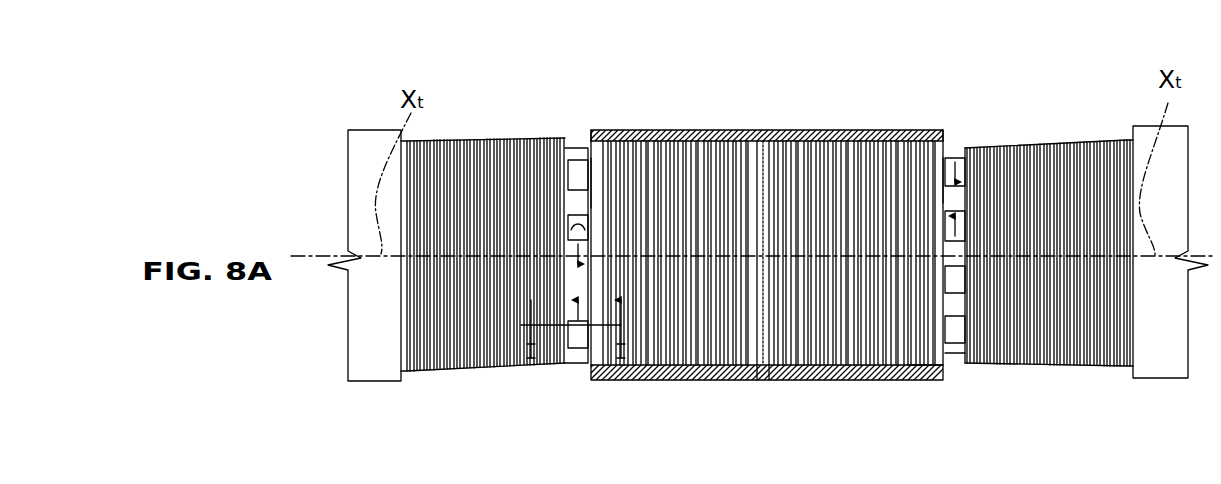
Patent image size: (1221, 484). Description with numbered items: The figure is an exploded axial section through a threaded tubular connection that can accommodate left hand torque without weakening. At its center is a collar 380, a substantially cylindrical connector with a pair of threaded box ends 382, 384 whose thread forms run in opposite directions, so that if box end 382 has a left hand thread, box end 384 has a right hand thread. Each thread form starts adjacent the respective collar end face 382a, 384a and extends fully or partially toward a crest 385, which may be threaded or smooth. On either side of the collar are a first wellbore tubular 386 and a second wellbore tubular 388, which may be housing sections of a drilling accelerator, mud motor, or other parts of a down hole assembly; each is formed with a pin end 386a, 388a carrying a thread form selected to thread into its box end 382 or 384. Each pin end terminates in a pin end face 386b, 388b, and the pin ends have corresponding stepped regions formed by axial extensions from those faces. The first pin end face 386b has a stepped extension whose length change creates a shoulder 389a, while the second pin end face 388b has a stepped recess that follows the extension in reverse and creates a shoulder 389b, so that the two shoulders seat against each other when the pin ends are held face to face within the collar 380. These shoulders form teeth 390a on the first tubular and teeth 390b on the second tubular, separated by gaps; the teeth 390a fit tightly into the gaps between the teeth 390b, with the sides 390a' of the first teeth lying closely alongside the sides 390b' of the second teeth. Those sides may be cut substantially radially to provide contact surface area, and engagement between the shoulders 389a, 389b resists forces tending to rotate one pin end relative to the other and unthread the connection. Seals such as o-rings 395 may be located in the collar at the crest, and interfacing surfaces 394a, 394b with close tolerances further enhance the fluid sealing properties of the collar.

The collar 380 is at (805, 122).
The box end 382 is at (678, 124).
The collar end face 382a is at (583, 122).
The box end 384 is at (868, 133).
The collar end face 384a is at (940, 124).
The crest 385 is at (766, 136).
The first wellbore tubular 386 is at (456, 362).
The pin end 386a is at (552, 357).
The pin end face 386b is at (562, 196).
The second wellbore tubular 388 is at (1148, 355).
The pin end 388a is at (963, 352).
The pin end face 388b is at (955, 210).
The shoulder 389a is at (583, 182).
The shoulder 389b is at (933, 172).
The tooth 390a is at (550, 146).
The tooth side 390a' is at (580, 335).
The tooth 390b is at (1002, 168).
The tooth side 390b' is at (950, 349).
The interfacing surface 394a is at (935, 363).
The interfacing surface 394b is at (1117, 360).
The o-ring 395 is at (757, 372).